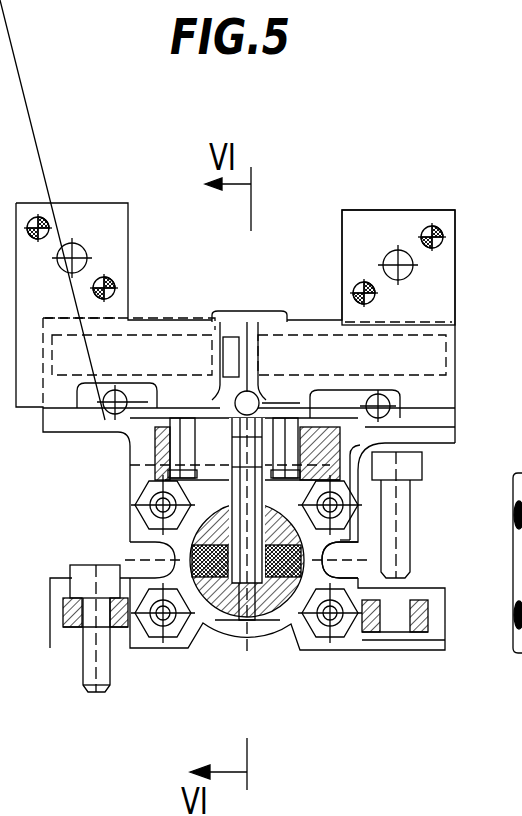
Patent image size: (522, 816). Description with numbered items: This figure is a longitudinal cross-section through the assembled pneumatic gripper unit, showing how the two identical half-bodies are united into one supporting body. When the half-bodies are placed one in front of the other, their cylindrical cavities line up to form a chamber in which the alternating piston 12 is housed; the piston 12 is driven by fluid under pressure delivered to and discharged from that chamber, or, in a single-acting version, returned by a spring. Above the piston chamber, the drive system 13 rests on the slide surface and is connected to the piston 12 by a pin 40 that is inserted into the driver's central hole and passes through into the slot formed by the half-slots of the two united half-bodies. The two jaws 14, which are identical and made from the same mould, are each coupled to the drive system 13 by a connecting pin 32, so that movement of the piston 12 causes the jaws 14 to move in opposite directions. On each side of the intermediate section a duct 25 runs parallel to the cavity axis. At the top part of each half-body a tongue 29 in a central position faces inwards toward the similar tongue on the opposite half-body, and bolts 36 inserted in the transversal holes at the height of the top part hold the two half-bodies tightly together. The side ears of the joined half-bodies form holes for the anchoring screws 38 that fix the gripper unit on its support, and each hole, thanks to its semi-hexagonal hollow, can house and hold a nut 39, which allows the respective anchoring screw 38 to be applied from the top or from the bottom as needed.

The alternating piston 12 is at (260, 636).
The drive system 13 is at (335, 428).
The jaws 14 is at (457, 266).
The duct 25 is at (337, 572).
The tongue 29 is at (255, 310).
The connecting pin 32 is at (158, 468).
The bolts 36 is at (109, 413).
The anchoring screws 38 is at (112, 680).
The nut 39 is at (62, 620).
The pin 40 is at (213, 625).